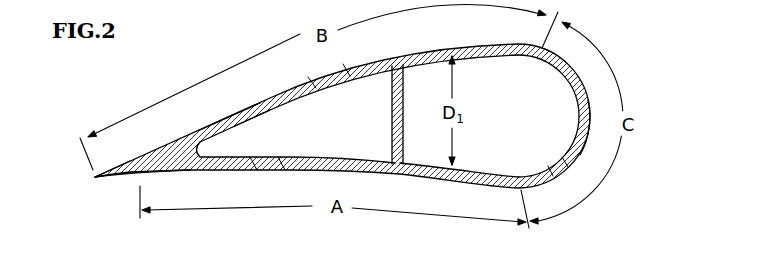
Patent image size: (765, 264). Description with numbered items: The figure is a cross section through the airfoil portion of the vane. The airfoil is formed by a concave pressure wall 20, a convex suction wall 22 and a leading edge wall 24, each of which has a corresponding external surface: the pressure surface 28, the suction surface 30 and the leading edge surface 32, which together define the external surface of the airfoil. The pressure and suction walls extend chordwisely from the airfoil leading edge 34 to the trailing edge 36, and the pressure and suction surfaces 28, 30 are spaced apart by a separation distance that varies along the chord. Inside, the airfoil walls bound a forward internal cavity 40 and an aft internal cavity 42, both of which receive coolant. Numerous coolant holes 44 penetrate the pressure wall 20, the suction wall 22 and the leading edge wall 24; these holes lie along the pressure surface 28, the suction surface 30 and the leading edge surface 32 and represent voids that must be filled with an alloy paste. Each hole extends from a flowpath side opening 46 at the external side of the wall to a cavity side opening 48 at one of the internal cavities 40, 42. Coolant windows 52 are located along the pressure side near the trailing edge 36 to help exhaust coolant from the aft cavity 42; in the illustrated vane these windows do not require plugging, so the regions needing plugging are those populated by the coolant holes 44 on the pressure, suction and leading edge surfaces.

The concave pressure wall 20 is at (328, 171).
The convex suction wall 22 is at (442, 48).
The leading edge wall 24 is at (575, 102).
The pressure surface 28 is at (400, 172).
The suction surface 30 is at (355, 64).
The leading edge surface 32 is at (590, 128).
The airfoil leading edge 34 is at (589, 133).
The trailing edge 36 is at (95, 177).
The forward internal cavity 40 is at (485, 122).
The aft internal cavity 42 is at (318, 131).
The coolant holes 44 is at (335, 73).
The flowpath side opening 46 is at (240, 112).
The cavity side opening 48 is at (266, 118).
The coolant windows 52 is at (105, 182).